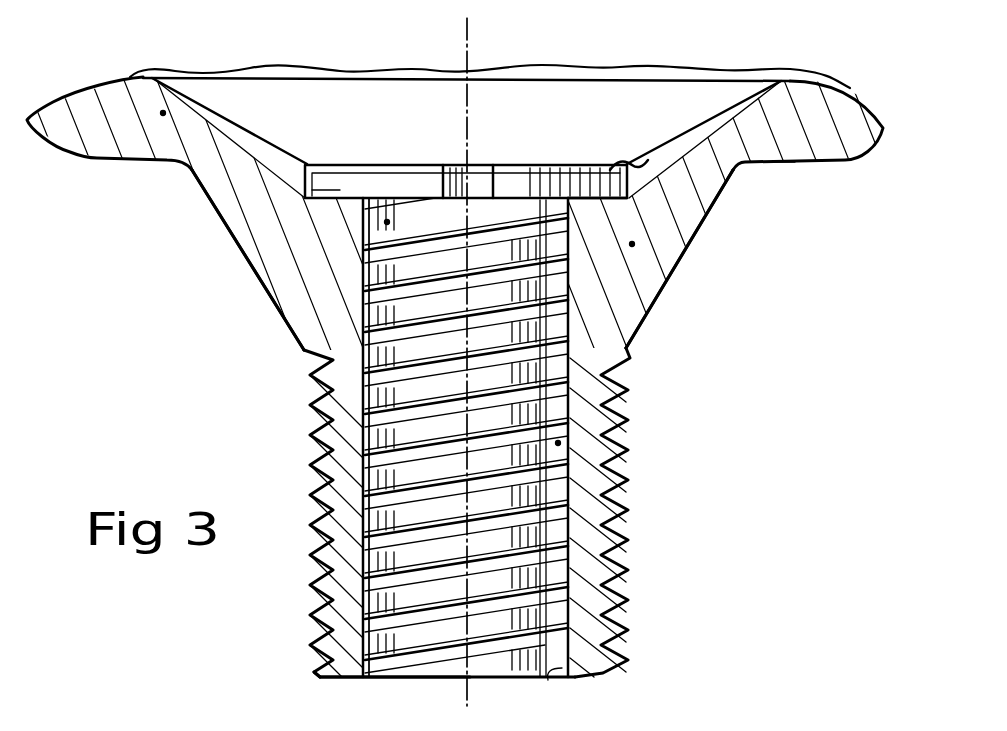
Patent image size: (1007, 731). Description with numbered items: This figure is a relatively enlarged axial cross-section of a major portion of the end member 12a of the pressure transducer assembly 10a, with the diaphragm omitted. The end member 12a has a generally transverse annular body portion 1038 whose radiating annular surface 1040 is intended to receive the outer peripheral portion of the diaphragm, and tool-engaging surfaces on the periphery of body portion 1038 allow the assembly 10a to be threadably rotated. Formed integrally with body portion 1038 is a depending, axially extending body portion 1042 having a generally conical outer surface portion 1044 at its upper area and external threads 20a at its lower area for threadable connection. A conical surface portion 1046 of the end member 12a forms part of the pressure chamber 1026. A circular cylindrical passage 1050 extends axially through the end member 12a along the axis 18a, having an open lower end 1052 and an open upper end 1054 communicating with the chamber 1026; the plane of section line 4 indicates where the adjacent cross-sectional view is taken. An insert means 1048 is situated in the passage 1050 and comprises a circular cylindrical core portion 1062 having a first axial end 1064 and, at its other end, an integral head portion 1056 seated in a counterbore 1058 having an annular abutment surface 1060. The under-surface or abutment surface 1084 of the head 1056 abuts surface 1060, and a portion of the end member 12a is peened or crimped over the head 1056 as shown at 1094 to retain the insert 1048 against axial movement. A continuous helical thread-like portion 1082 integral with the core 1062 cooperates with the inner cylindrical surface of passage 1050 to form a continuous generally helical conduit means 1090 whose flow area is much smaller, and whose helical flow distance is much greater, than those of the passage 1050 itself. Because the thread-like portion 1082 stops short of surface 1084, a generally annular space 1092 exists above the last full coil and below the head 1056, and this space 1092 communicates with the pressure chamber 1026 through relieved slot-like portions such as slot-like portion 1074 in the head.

The assembly 10a is at (178, 266).
The end member 12a is at (644, 321).
The axis 18a is at (470, 43).
The external threads 20a is at (630, 492).
The pressure chamber 1026 is at (356, 197).
The annular body portion 1038 is at (162, 113).
The radiating annular surface 1040 is at (753, 83).
The axially extending body portion 1042 is at (650, 262).
The conical outer surface portion 1044 is at (632, 244).
The conical surface portion 1046 is at (250, 133).
The insert means 1048 is at (547, 527).
The passage 1050 is at (560, 614).
The open lower end 1052 is at (548, 680).
The open upper end 1054 is at (387, 220).
The head portion 1056 is at (524, 193).
The counterbore 1058 is at (356, 143).
The annular abutment surface 1060 is at (375, 192).
The core portion 1062 is at (362, 587).
The first axial end 1064 is at (408, 678).
The slot-like portion 1074 is at (454, 196).
The thread-like portion 1082 is at (362, 425).
The abutment surface 1084 is at (615, 224).
The conduit means 1090 is at (560, 443).
The annular space 1092 is at (383, 238).
The peened portion 1094 is at (640, 162).
The section line 4- 4 is at (198, 195).